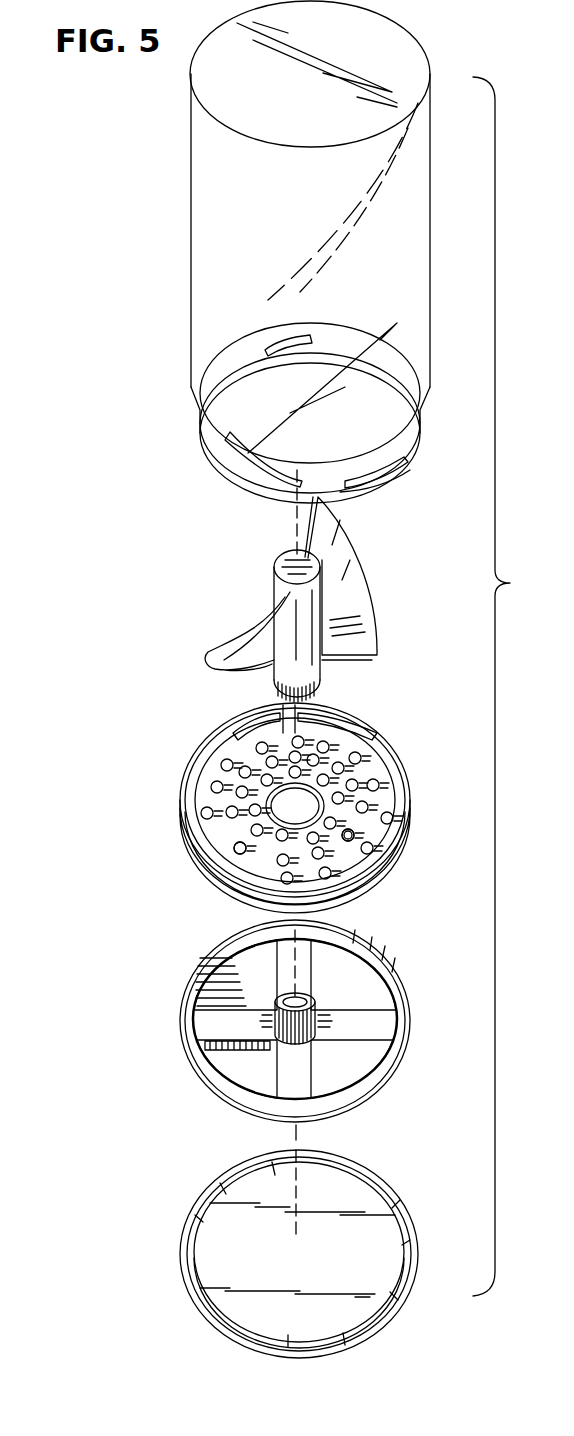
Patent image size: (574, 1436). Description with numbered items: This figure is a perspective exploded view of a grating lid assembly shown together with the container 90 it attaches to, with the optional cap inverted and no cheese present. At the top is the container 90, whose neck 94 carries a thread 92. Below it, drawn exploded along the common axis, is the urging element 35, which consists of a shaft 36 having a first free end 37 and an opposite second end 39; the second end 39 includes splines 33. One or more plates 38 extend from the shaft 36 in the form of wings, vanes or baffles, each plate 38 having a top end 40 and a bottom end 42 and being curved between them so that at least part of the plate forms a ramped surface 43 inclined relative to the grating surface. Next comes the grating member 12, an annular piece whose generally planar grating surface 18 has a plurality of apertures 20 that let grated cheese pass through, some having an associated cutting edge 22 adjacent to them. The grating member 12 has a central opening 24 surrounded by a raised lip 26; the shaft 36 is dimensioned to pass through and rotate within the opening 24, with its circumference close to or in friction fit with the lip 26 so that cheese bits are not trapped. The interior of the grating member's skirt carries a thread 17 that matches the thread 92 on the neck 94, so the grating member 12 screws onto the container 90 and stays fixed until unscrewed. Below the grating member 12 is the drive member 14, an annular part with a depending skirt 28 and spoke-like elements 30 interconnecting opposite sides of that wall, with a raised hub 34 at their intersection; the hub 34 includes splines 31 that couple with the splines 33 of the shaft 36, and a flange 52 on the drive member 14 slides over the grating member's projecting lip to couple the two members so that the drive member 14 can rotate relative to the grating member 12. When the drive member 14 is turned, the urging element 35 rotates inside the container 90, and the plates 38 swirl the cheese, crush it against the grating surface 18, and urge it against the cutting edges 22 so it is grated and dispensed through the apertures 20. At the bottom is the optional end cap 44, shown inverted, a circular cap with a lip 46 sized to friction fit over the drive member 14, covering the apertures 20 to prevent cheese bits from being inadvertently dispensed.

The container 90 is at (178, 283).
The thread 92 is at (223, 465).
The neck 94 is at (350, 503).
The top end 40 is at (290, 520).
The urging element 35 is at (295, 613).
The first free end 37 is at (268, 560).
The shaft 36 is at (325, 668).
The second end 39 is at (320, 700).
The plates 38 is at (255, 632).
The ramped surface 43 is at (363, 619).
The bottom end 42 is at (360, 658).
The grating member 12 is at (295, 817).
The thread 17 is at (370, 730).
The splines 33 is at (245, 712).
The raised lip 26 is at (300, 808).
The opening 24 is at (270, 812).
The grating surface 18 is at (268, 850).
The cutting edge 22 is at (355, 836).
The apertures 20 is at (358, 862).
The drive member 14 is at (298, 1038).
The skirt 28 is at (350, 1100).
The spoke-like elements 30 is at (348, 1033).
The flange 52 is at (372, 938).
The splines 31 is at (288, 1035).
The raised hub 34 is at (258, 1018).
The end cap 44 is at (268, 1254).
The lip 46 is at (200, 1297).